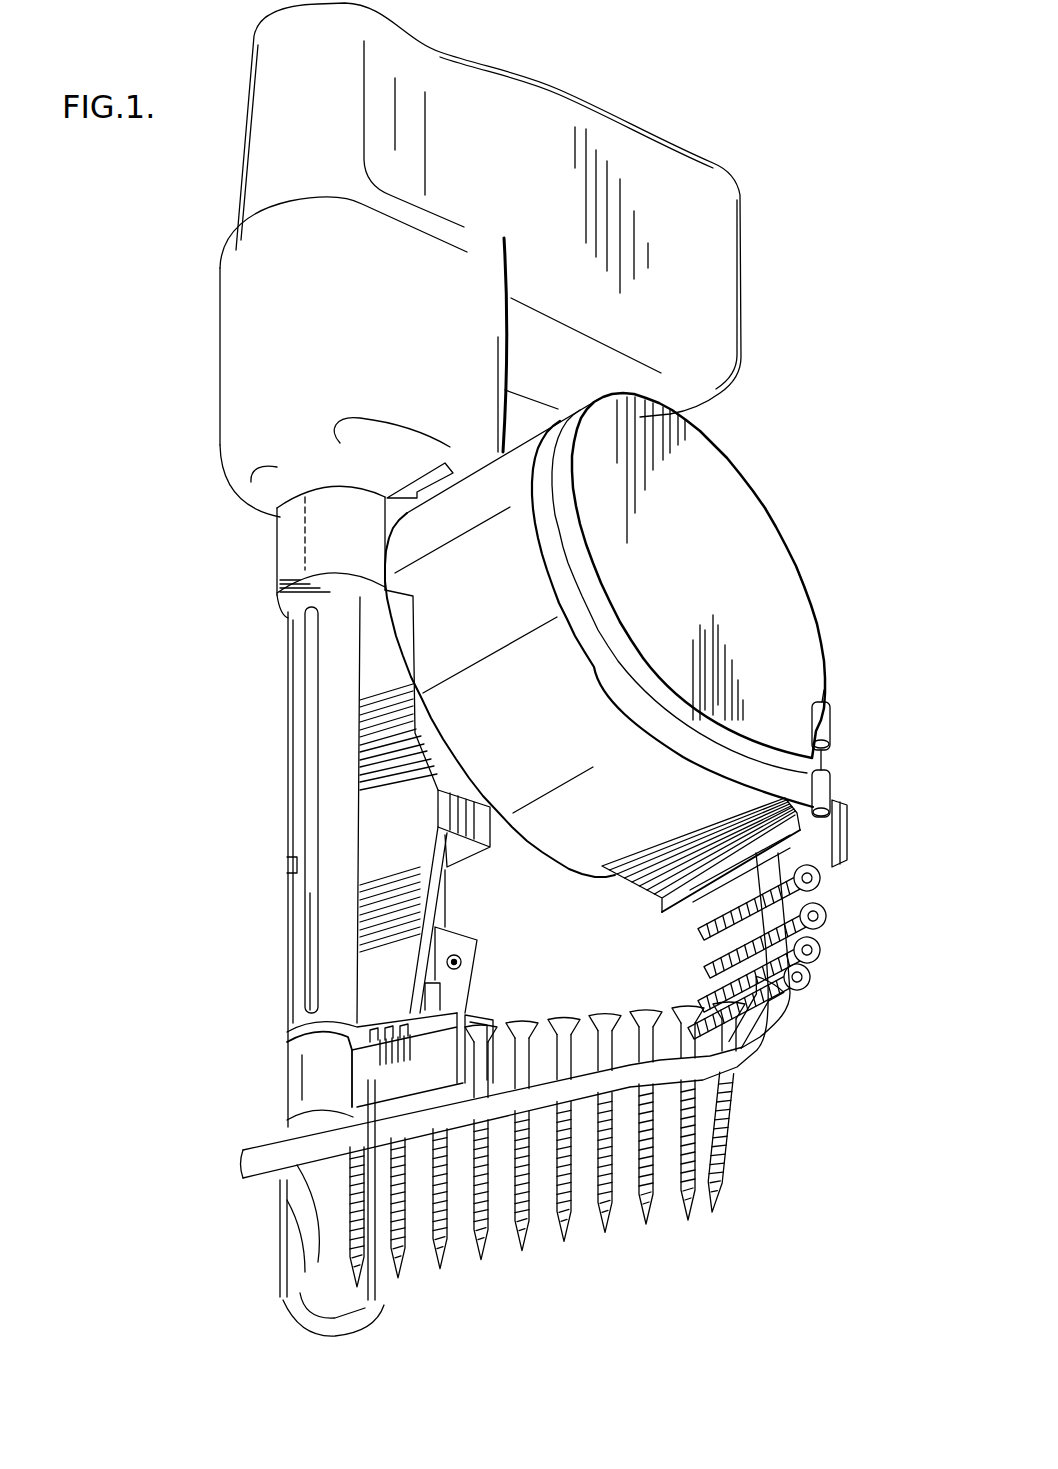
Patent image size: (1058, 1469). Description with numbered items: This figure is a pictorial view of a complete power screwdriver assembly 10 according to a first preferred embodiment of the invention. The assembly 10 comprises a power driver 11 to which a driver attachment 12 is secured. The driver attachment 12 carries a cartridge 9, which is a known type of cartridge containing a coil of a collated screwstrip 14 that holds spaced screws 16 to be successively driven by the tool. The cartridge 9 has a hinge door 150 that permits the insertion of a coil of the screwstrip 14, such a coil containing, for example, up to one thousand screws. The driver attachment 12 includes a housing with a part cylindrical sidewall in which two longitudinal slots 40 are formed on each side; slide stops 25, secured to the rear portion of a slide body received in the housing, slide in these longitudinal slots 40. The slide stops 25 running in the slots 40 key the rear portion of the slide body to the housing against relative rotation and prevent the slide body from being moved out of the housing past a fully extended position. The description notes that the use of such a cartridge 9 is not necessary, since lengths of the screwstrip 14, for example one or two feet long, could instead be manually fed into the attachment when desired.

The power screwdriver assembly 10 is at (160, 465).
The power driver 11 is at (681, 177).
The driver attachment 12 is at (212, 651).
The longitudinal slots 40 is at (312, 797).
The slide stops 25 is at (310, 963).
The hinge door 150 is at (706, 571).
The cartridge 9 is at (783, 550).
The screws 16 is at (577, 1013).
The collated screwstrip 14 is at (817, 993).